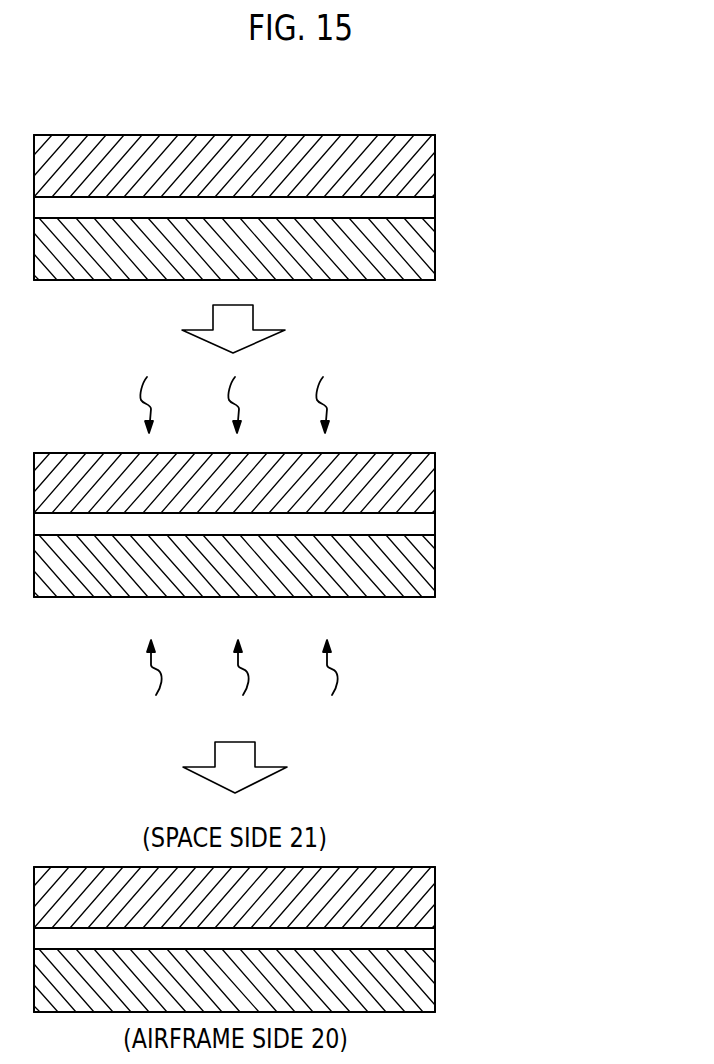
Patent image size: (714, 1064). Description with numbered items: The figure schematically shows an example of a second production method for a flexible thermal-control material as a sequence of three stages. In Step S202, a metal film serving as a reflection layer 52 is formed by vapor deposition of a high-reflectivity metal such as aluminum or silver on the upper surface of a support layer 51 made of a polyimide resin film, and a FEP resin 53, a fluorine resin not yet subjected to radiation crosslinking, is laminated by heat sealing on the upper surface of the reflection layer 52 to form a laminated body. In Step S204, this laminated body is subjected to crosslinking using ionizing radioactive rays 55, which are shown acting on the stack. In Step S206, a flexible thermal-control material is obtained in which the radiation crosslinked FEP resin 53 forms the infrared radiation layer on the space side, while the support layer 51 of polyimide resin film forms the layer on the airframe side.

The support layer 51 is at (436, 248).
The reflection layer 52 is at (436, 203).
The FEP resin 53 is at (436, 165).
The ionizing radioactive rays 55 is at (324, 380).
The Step S202 is at (507, 149).
The Step S204 is at (507, 442).
The Step S206 is at (508, 865).